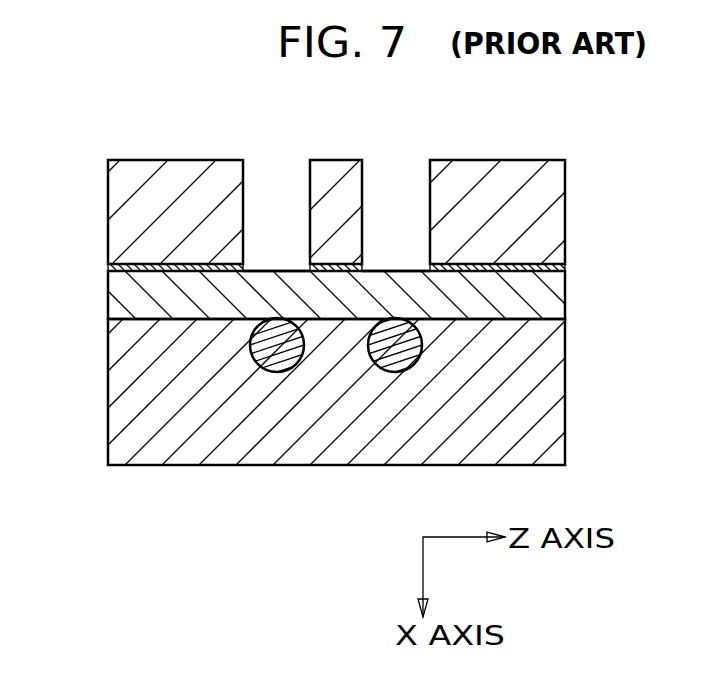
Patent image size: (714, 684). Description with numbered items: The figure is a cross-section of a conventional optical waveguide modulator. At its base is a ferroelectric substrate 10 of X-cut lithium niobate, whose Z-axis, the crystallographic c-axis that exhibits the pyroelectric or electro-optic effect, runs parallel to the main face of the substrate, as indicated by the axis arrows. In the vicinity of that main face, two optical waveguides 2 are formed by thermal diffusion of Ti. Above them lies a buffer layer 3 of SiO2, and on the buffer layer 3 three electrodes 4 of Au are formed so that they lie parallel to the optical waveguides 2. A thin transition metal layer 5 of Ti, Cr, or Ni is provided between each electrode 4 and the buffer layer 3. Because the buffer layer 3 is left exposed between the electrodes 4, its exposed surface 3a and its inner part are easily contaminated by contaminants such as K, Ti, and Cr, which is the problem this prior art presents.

The optical waveguide 2 is at (280, 355).
The buffer layer 3 is at (115, 302).
The exposed surface of buffer layer 3a is at (273, 275).
The electrode 4 is at (178, 166).
The transition metal layer 5 is at (108, 268).
The ferroelectric substrate 10 is at (503, 407).